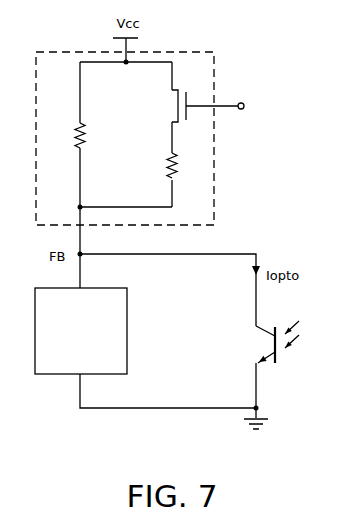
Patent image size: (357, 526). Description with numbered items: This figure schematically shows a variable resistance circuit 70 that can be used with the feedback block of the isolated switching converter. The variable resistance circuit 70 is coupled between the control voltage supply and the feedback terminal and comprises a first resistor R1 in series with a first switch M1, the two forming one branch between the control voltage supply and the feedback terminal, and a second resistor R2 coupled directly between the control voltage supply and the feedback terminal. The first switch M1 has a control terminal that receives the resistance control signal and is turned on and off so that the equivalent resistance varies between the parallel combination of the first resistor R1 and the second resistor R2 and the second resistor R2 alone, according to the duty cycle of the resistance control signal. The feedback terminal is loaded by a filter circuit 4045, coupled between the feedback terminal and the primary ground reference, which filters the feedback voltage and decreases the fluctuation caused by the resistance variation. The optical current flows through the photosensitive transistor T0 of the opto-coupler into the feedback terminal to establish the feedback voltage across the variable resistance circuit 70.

The variable resistance circuit 70 is at (215, 61).
The second resistor R2 is at (65, 135).
The first resistor R1 is at (185, 165).
The first switch M1 is at (190, 106).
The filter circuit 4045 is at (81, 331).
The photosensitive transistor T0 is at (267, 342).